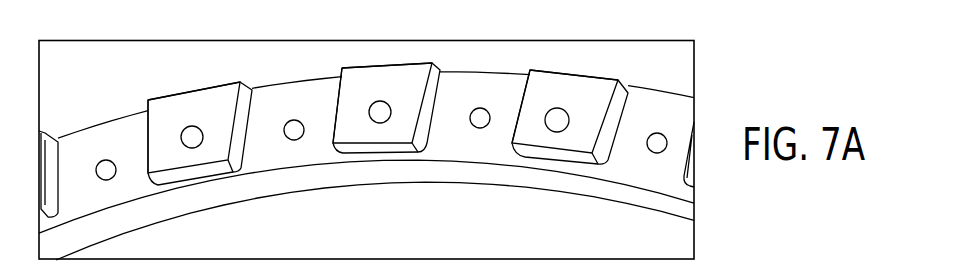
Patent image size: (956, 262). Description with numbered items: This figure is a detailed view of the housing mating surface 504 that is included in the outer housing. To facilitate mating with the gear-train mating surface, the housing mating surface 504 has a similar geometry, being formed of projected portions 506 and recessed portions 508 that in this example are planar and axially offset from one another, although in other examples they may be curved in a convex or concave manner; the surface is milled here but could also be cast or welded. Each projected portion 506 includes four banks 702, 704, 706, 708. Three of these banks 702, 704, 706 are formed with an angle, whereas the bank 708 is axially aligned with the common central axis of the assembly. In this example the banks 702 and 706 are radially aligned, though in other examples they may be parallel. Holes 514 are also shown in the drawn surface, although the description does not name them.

The housing mating surface 504 is at (325, 170).
The projected portion 506 is at (203, 103).
The recessed portion 508 is at (76, 145).
The fastener hole 514 is at (106, 170).
The bank 702 is at (148, 140).
The bank 704 is at (203, 174).
The bank 706 is at (245, 127).
The bank 708 is at (178, 98).